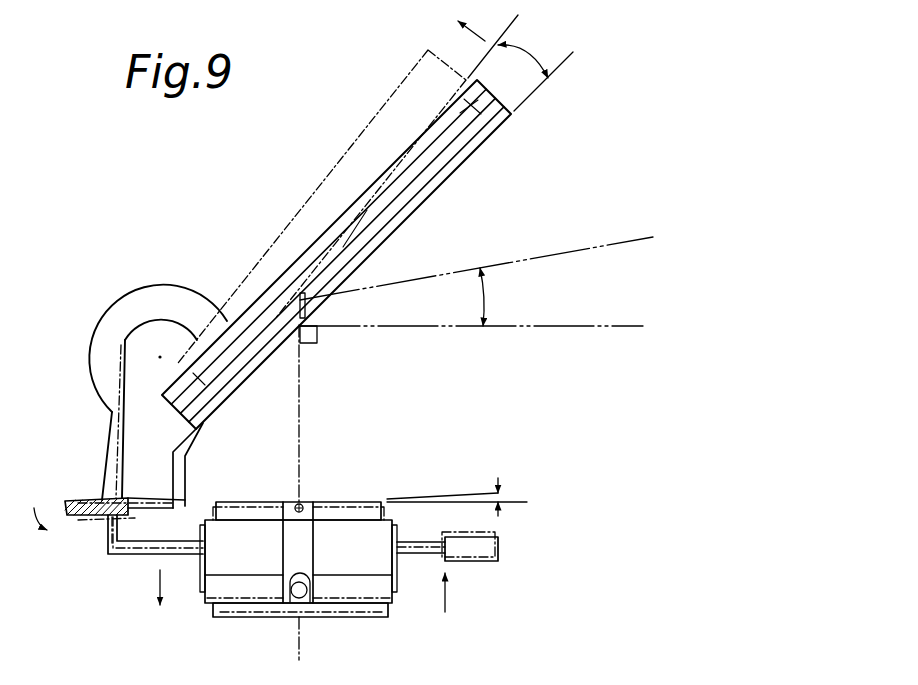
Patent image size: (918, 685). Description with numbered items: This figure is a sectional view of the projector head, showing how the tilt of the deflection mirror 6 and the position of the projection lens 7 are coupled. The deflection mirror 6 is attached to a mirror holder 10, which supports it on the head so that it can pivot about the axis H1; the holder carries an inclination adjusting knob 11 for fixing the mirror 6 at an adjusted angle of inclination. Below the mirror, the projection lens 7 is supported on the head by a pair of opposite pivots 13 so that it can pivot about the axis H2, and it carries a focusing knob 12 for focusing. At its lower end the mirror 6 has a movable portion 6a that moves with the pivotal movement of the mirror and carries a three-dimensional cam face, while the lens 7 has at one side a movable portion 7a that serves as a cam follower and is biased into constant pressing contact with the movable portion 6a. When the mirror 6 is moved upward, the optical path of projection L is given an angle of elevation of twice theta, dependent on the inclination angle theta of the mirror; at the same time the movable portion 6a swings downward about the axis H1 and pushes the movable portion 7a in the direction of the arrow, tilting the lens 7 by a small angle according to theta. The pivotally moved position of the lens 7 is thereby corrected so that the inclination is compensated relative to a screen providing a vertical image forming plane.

The deflection mirror 6 is at (440, 150).
The movable portion of the mirror 6a is at (66, 504).
The projection lens 7 is at (223, 500).
The movable portion of the lens 7a is at (108, 545).
The mirror holder 10 is at (113, 424).
The inclination adjusting knob 11 is at (171, 285).
The focusing knob 12 is at (472, 562).
The pivot 13 is at (304, 601).
The axis H1 is at (160, 356).
The axis H2 is at (289, 591).
The optical path of projection L is at (553, 254).